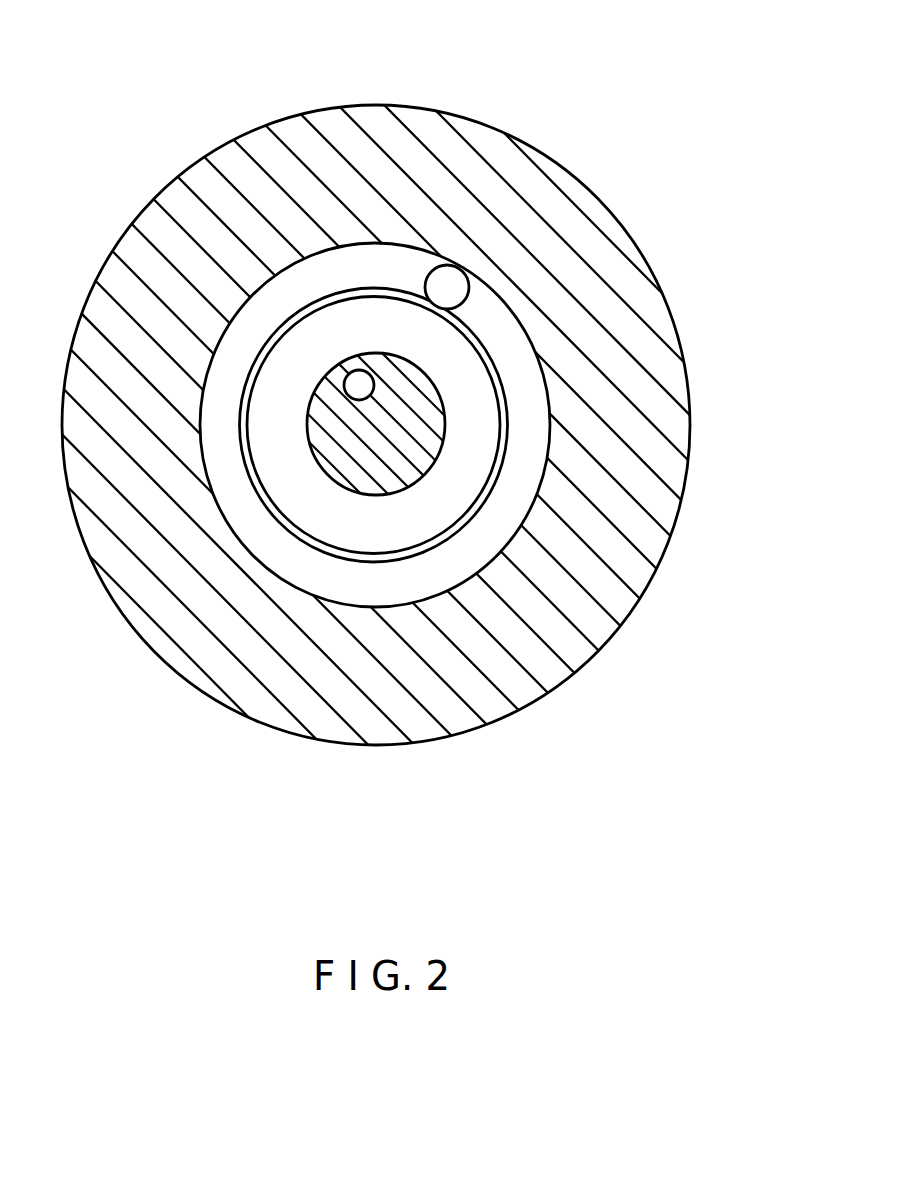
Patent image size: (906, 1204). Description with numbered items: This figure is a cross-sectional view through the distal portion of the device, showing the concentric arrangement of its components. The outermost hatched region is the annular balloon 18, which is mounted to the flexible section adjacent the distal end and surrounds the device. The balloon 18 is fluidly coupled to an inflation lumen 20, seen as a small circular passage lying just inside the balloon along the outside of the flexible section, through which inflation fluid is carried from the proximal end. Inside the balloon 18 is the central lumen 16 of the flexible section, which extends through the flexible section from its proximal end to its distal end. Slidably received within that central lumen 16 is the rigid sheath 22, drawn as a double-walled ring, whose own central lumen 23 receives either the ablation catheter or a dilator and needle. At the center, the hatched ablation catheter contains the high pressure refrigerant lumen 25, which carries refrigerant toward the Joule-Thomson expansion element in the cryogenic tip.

The annular balloon 18 is at (510, 682).
The central lumen 16 is at (520, 373).
The rigid sheath 22 is at (510, 452).
The central lumen 23 is at (397, 523).
The inflation lumen 20 is at (473, 293).
The high pressure refrigerant lumen 25 is at (354, 382).